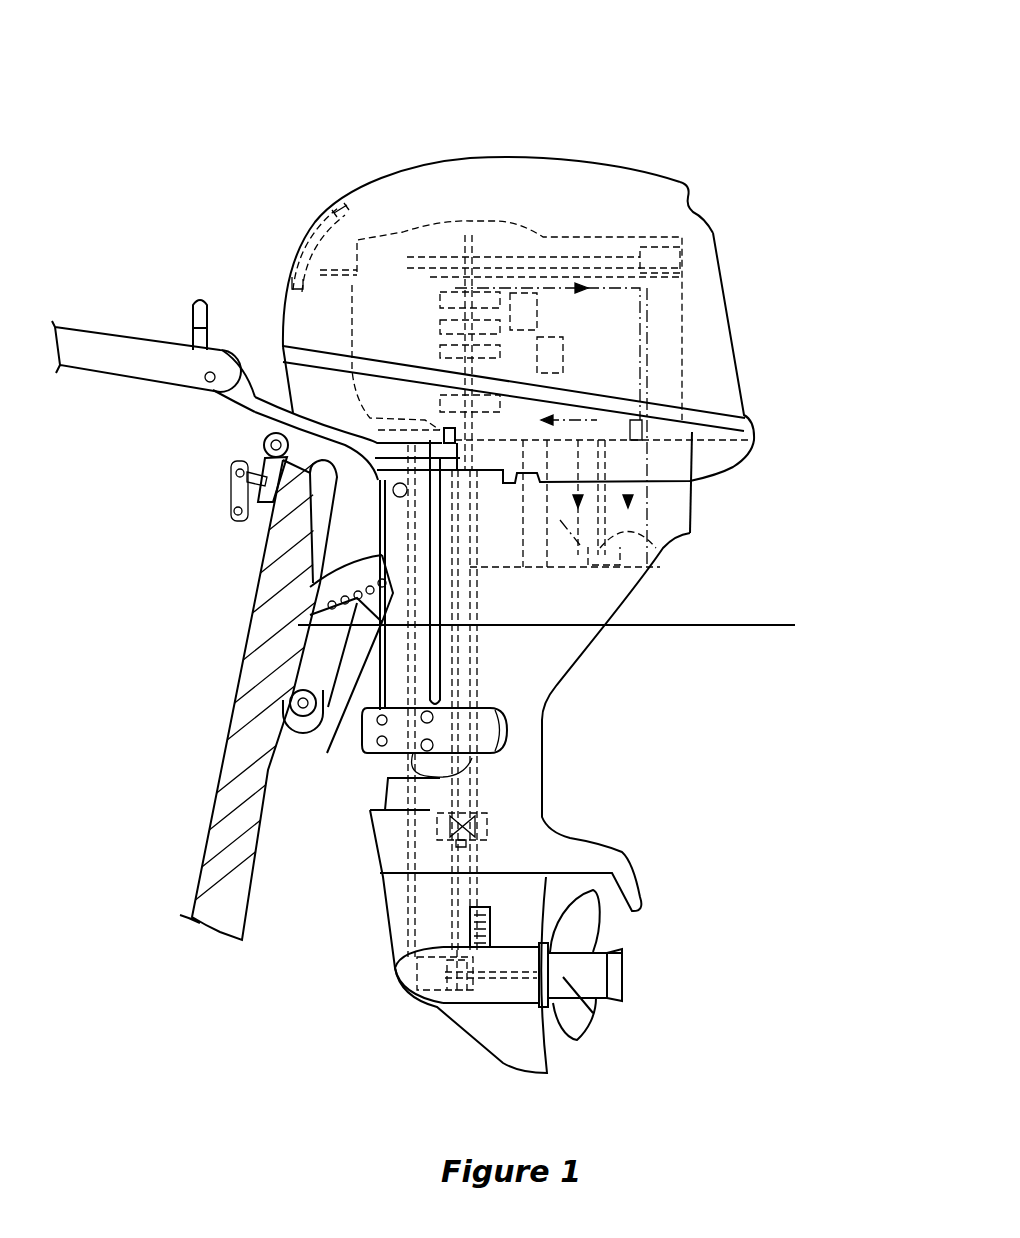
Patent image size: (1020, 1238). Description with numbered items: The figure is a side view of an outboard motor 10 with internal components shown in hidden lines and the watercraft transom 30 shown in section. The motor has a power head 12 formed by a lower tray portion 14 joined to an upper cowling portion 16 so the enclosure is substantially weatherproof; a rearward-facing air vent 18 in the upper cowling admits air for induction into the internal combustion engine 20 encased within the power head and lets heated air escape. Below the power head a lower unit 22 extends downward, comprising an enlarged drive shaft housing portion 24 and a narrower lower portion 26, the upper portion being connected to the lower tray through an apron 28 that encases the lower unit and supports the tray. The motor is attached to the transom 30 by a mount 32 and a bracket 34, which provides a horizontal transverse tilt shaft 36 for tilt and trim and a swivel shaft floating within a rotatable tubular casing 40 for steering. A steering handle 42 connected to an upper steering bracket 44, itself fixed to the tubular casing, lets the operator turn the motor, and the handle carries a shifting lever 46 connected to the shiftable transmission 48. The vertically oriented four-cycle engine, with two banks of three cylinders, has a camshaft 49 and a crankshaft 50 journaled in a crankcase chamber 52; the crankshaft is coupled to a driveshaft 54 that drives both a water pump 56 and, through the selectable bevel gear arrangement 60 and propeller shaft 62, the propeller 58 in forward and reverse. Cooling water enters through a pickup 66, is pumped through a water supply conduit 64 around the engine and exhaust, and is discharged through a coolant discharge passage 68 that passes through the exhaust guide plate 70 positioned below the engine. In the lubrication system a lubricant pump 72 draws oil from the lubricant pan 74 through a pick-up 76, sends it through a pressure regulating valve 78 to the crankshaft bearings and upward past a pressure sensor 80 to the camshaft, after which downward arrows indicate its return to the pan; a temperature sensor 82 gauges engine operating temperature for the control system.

The outboard motor 10 is at (742, 183).
The power head 12 is at (518, 150).
The lower tray portion 14 is at (754, 447).
The upper cowling portion 16 is at (723, 353).
The air vent 18 is at (699, 203).
The internal combustion engine 20 is at (692, 308).
The lower unit 22 is at (615, 628).
The drive shaft housing portion 24 is at (562, 688).
The lower portion 26 is at (395, 893).
The apron 28 is at (677, 512).
The transom 30 is at (230, 880).
The mount 32 is at (490, 730).
The bracket 34 is at (347, 537).
The tilt shaft 36 is at (263, 445).
The tubular casing 40 is at (361, 611).
The steering handle 42 is at (265, 392).
The steering bracket 44 is at (114, 345).
The shifting lever 46 is at (195, 300).
The shiftable transmission 48 is at (432, 988).
The camshaft 49 is at (653, 368).
The crankshaft 50 is at (445, 312).
The crankcase chamber 52 is at (380, 336).
The driveshaft 54 is at (475, 605).
The water pump 56 is at (487, 827).
The propeller 58 is at (582, 930).
The selectable bevel gear arrangement 60 is at (472, 987).
The propeller shaft 62 is at (512, 980).
The water supply conduit 64 is at (475, 635).
The pickup 66 is at (492, 912).
The coolant discharge passage 68 is at (627, 597).
The exhaust guide plate 70 is at (700, 483).
The lubricant pump 72 is at (720, 473).
The lubricant pan 74 is at (670, 533).
The pick-up 76 is at (687, 537).
The pressure regulating valve 78 is at (600, 387).
The pressure sensor 80 is at (468, 262).
The temperature sensor 82 is at (427, 233).